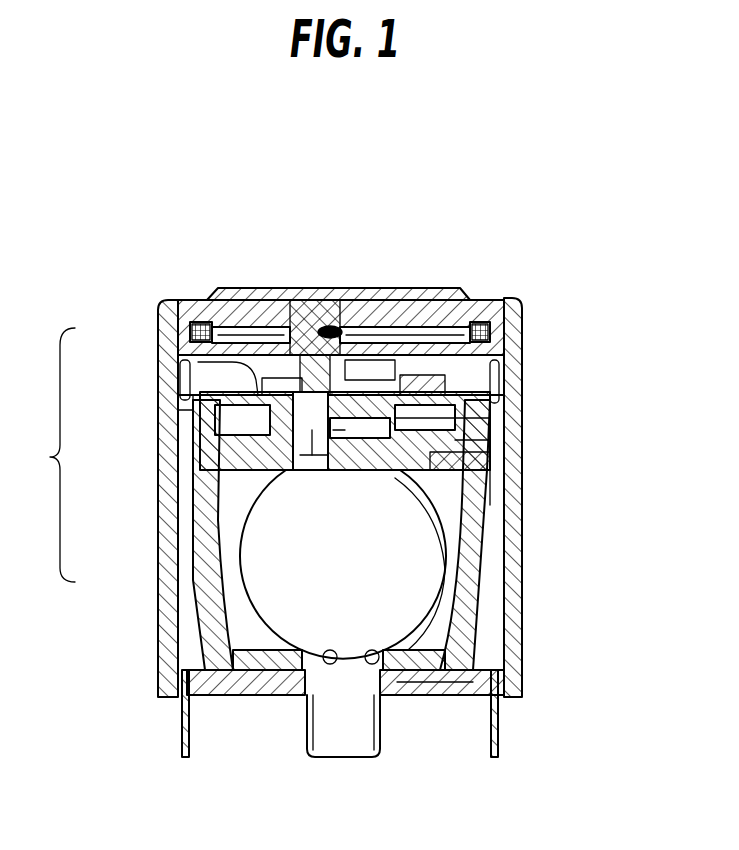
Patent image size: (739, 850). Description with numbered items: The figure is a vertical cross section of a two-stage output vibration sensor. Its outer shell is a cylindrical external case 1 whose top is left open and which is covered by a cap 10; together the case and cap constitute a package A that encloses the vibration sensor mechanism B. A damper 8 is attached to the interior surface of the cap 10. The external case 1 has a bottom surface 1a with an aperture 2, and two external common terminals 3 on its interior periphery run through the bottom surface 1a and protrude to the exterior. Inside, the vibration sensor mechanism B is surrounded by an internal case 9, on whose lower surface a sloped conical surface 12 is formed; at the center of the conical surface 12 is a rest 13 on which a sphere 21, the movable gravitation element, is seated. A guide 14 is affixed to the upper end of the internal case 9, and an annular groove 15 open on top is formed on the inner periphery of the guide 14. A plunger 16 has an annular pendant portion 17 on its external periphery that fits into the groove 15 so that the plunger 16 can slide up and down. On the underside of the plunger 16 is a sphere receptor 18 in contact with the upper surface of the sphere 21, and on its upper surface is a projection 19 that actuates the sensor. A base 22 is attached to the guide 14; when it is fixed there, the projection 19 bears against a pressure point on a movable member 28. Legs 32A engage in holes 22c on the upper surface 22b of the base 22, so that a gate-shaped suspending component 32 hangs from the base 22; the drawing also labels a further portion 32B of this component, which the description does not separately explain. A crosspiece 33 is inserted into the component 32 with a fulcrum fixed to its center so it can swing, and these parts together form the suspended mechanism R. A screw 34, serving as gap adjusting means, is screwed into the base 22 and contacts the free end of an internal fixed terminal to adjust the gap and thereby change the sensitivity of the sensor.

The external case 1 is at (160, 527).
The bottom surface 1a is at (487, 670).
The aperture 2 is at (250, 695).
The external common terminals 3 is at (182, 740).
The damper 8 is at (344, 307).
The internal case 9 is at (205, 580).
The cap 10 is at (160, 304).
The conical surface 12 is at (365, 655).
The rest 13 is at (330, 655).
The guide 14 is at (504, 460).
The annular groove 15 is at (504, 507).
The plunger 16 is at (504, 543).
The annular pendant portion 17 is at (504, 423).
The sphere receptor 18 is at (504, 583).
The projection 19 is at (330, 440).
The sphere 21 is at (504, 630).
The base 22 is at (504, 387).
The upper surface 22b is at (190, 300).
The holes 22c is at (163, 428).
The movable member 28 is at (243, 307).
The suspending component 32 is at (433, 300).
The legs 32A is at (284, 305).
The spring stem 32B is at (325, 308).
The crosspiece 33 is at (427, 330).
The screw 34 is at (363, 300).
The package A is at (49, 455).
The vibration sensor mechanism B is at (504, 370).
The gap a is at (504, 450).
The suspended mechanism R is at (305, 465).